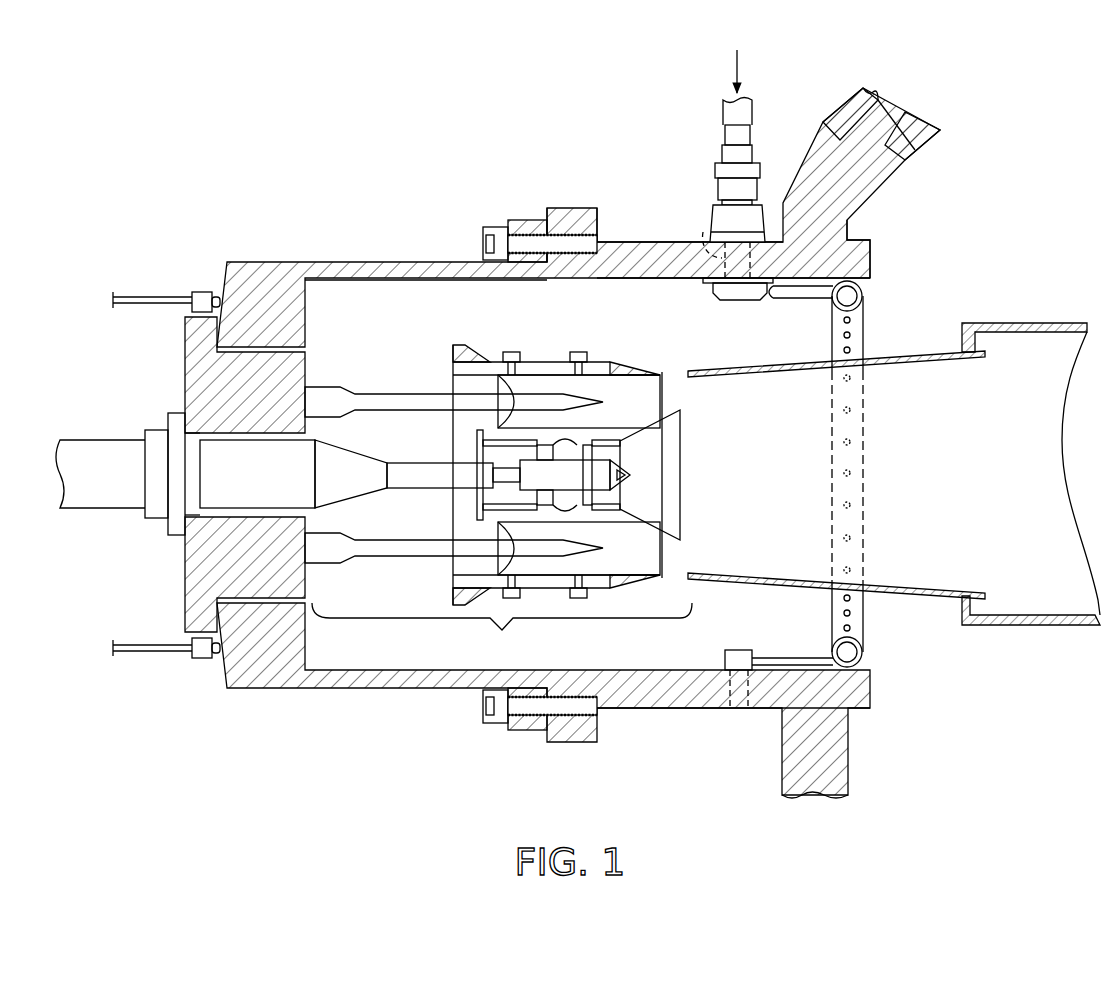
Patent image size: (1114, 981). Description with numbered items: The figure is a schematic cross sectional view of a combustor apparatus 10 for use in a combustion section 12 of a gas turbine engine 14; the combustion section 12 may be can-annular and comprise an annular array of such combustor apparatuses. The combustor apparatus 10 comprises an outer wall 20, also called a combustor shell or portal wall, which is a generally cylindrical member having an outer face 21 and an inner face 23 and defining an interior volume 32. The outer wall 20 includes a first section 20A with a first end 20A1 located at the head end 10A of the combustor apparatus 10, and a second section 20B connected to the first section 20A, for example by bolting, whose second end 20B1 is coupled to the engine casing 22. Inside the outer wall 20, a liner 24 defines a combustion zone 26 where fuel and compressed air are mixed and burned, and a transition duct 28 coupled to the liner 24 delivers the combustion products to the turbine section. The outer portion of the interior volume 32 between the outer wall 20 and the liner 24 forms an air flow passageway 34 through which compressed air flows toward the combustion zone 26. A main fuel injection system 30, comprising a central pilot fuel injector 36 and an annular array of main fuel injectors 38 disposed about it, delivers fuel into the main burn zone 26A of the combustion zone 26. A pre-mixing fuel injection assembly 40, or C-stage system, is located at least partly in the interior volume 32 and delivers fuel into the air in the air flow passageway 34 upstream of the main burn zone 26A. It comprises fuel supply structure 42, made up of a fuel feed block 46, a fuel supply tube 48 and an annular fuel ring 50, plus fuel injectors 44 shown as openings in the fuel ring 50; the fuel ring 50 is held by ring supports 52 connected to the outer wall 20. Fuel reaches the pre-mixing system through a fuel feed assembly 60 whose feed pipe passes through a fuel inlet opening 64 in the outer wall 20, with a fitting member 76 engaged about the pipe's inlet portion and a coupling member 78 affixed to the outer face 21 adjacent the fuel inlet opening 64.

The combustor apparatus 10 is at (240, 205).
The head end 10A is at (185, 380).
The combustion section 12 is at (1024, 122).
The gas turbine engine 14 is at (478, 92).
The outer wall 20 is at (543, 700).
The first section 20A is at (410, 262).
The first end 20A1 is at (307, 305).
The second section 20B is at (605, 280).
The second end 20B1 is at (870, 260).
The outer face 21 is at (632, 242).
The engine casing 22 is at (875, 113).
The inner face 23 is at (578, 282).
The liner 24 is at (733, 580).
The combustion zone 26 is at (926, 421).
The main burn zone 26A is at (758, 476).
The transition duct 28 is at (1035, 333).
The main fuel injection system 30 is at (498, 485).
The interior volume 32 is at (733, 700).
The air flow passageway 34 is at (557, 454).
The central pilot fuel injector 36 is at (405, 463).
The main fuel injectors 38 is at (406, 394).
The pre-mixing fuel injection assembly 40 is at (700, 317).
The fuel supply structure 42 is at (806, 474).
The fuel injectors 44 is at (852, 350).
The fuel feed block 46 is at (731, 325).
The fuel supply tube 48 is at (788, 298).
The annular fuel ring 50 is at (858, 632).
The ring supports 52 is at (779, 649).
The fuel feed assembly 60 is at (682, 164).
The fuel inlet opening 64 is at (707, 236).
The fitting member 76 is at (799, 102).
The coupling member 78 is at (718, 214).